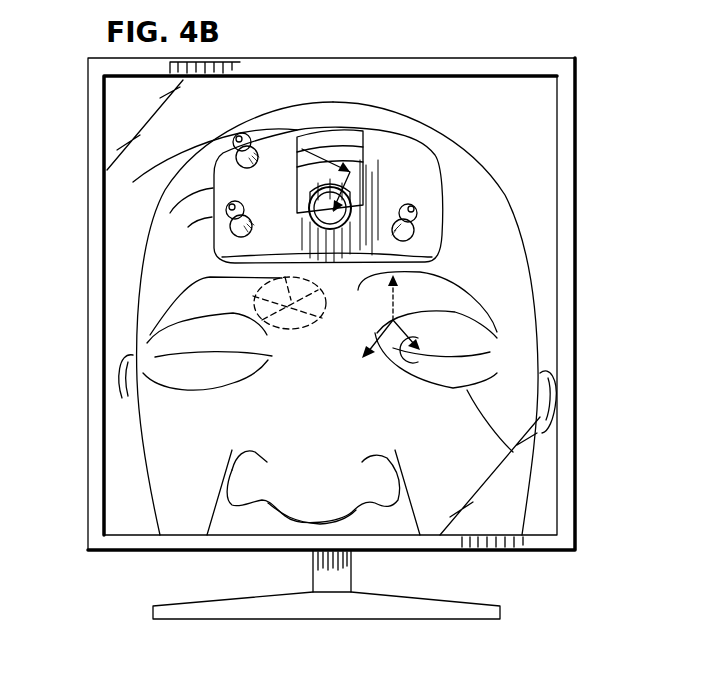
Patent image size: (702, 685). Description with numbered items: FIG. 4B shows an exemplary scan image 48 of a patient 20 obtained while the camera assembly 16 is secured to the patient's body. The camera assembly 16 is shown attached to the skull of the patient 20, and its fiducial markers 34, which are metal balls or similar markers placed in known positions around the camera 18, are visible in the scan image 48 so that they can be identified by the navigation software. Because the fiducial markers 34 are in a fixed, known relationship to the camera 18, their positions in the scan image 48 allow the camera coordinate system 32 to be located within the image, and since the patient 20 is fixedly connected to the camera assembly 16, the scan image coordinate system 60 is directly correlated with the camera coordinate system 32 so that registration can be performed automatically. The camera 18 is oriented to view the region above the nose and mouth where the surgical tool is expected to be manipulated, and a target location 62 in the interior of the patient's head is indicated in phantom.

The camera assembly 16 is at (452, 180).
The surgical navigation camera 18 is at (348, 152).
The patient 20 is at (506, 340).
The camera coordinate system 32 is at (308, 142).
The fiducial markers 34 is at (233, 148).
The scan image 48 is at (548, 458).
The scan image coordinate system 60 is at (510, 452).
The target location 62 is at (255, 296).